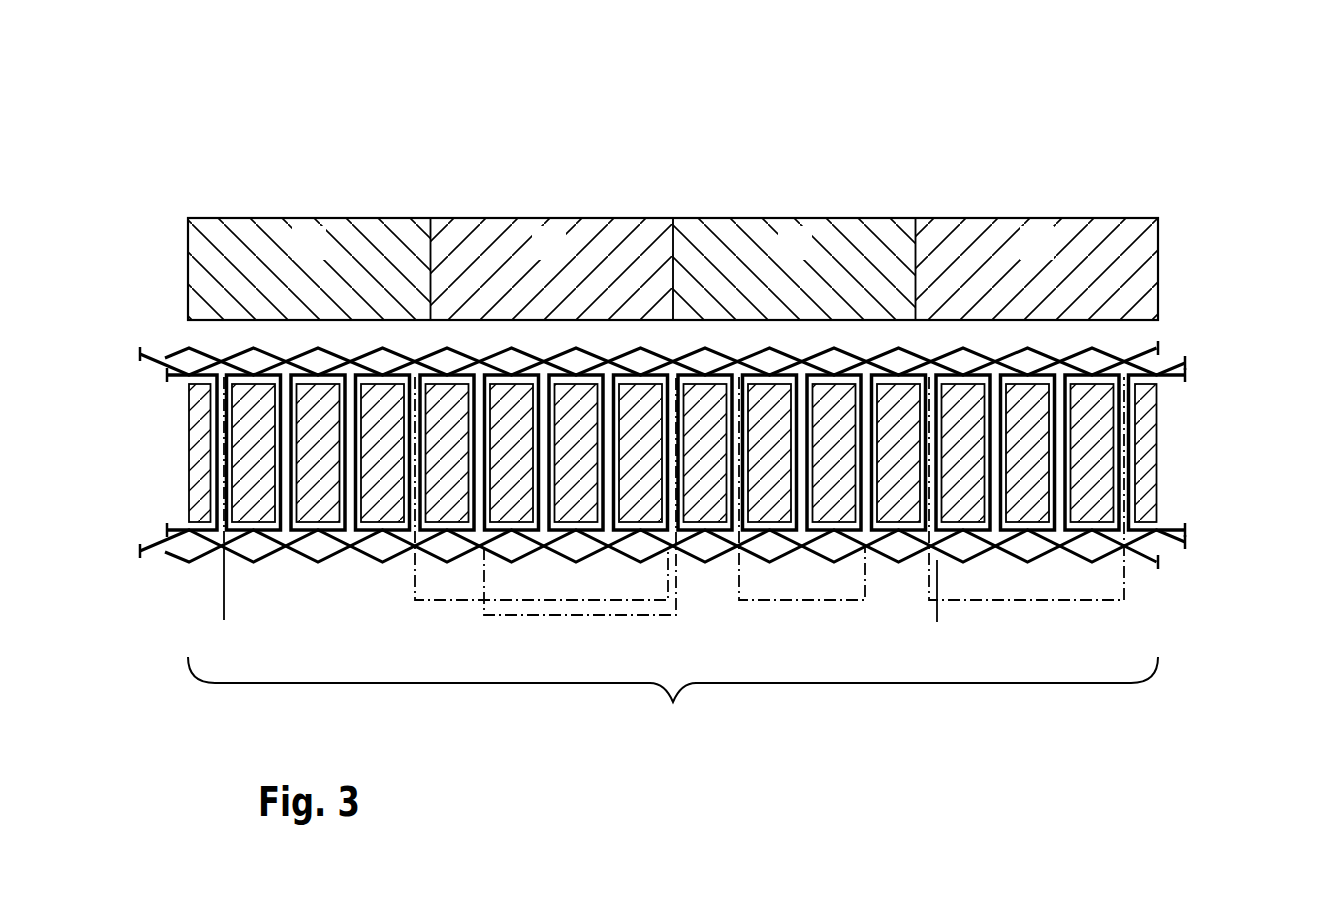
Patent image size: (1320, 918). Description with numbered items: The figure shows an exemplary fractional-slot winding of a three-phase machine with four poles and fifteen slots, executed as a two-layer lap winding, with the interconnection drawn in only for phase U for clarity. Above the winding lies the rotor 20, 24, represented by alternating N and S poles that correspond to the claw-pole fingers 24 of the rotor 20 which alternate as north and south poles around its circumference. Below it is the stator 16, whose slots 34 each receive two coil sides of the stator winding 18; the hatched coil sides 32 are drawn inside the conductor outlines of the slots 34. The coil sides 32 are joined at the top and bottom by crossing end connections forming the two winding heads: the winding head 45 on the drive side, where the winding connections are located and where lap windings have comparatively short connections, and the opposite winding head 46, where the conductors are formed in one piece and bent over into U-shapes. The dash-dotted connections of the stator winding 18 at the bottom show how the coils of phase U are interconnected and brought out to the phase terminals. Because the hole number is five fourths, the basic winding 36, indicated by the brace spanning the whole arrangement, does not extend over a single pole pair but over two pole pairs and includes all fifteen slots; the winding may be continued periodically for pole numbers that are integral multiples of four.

The stator 16 is at (690, 489).
The stator winding 18 is at (310, 558).
The rotor 20 is at (673, 190).
The claw-pole fingers 24 is at (673, 269).
The coils 32 is at (1098, 423).
The slot 34 is at (1135, 478).
The basic winding 36 is at (673, 702).
The winding head 45 is at (1210, 540).
The opposite winding head 46 is at (1208, 362).